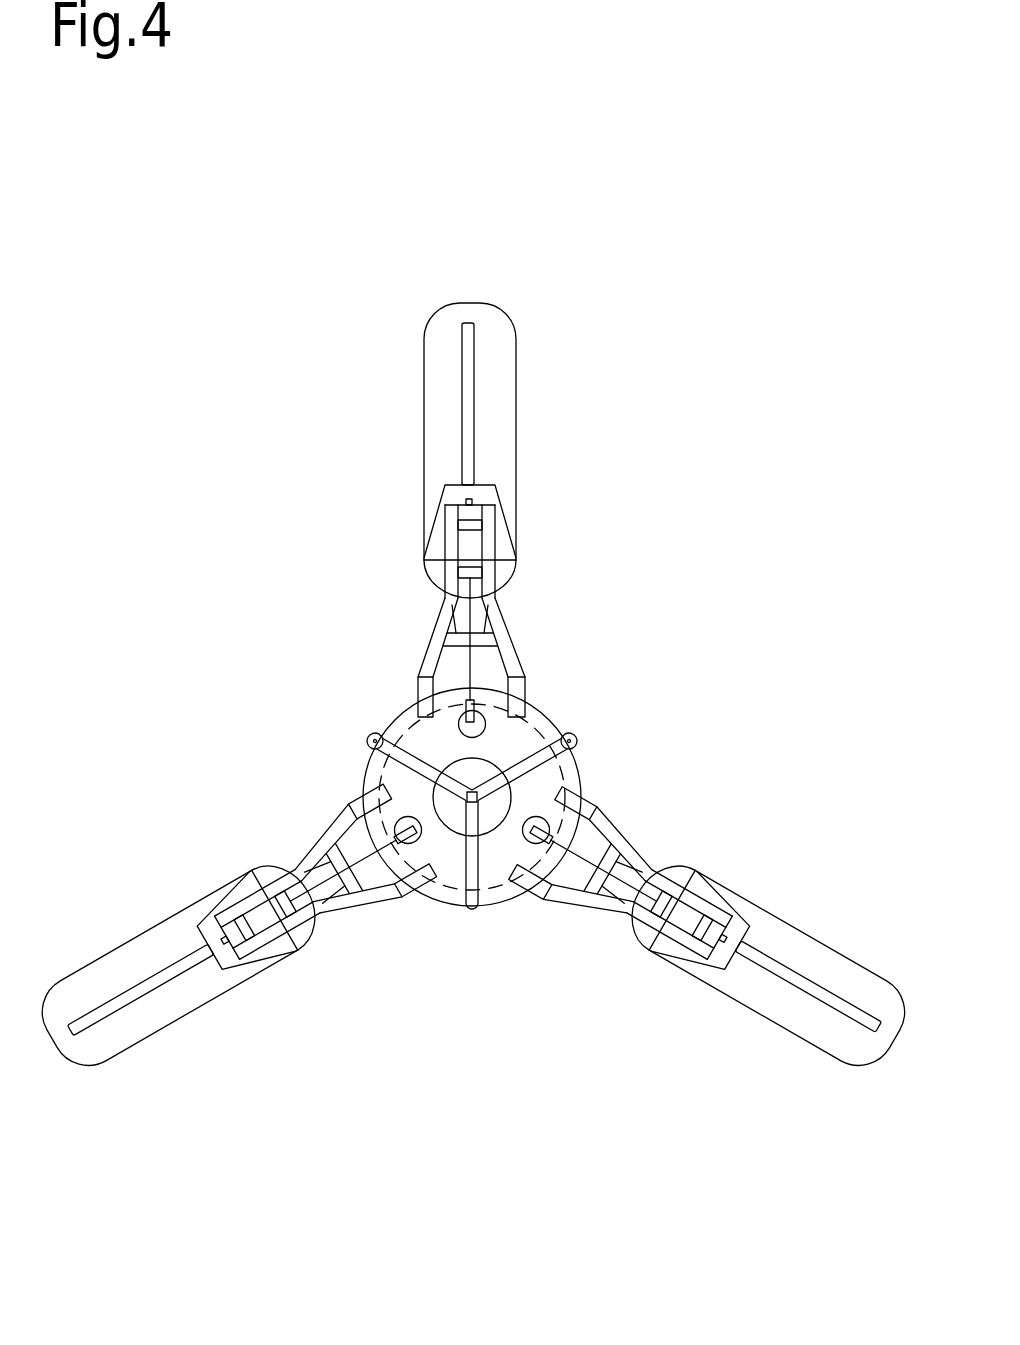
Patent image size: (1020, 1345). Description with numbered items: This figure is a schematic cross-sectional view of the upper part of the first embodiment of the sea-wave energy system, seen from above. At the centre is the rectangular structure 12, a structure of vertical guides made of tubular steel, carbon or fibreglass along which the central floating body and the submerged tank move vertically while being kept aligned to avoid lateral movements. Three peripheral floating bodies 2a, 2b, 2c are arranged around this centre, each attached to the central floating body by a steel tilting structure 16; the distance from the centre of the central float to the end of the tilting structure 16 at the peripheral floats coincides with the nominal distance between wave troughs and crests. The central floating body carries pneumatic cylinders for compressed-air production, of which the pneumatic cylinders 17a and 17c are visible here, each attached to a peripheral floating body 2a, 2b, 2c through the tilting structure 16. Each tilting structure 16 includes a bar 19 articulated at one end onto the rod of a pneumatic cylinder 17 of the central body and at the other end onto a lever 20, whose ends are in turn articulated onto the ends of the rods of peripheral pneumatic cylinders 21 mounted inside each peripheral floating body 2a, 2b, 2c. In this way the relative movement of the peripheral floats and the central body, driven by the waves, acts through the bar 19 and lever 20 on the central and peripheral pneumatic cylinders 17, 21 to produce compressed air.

The peripheral floating body 2a is at (687, 1043).
The peripheral floating body 2b is at (142, 873).
The peripheral floating body 2c is at (551, 414).
The rectangular structure 12 is at (527, 762).
The tilting structure 16 is at (568, 955).
The pneumatic cylinder 17 is at (536, 830).
The pneumatic cylinder 17a is at (472, 724).
The pneumatic cylinder 17c is at (408, 828).
The bar 19 is at (385, 850).
The lever 20 is at (280, 951).
The peripheral pneumatic cylinder 21 is at (792, 983).